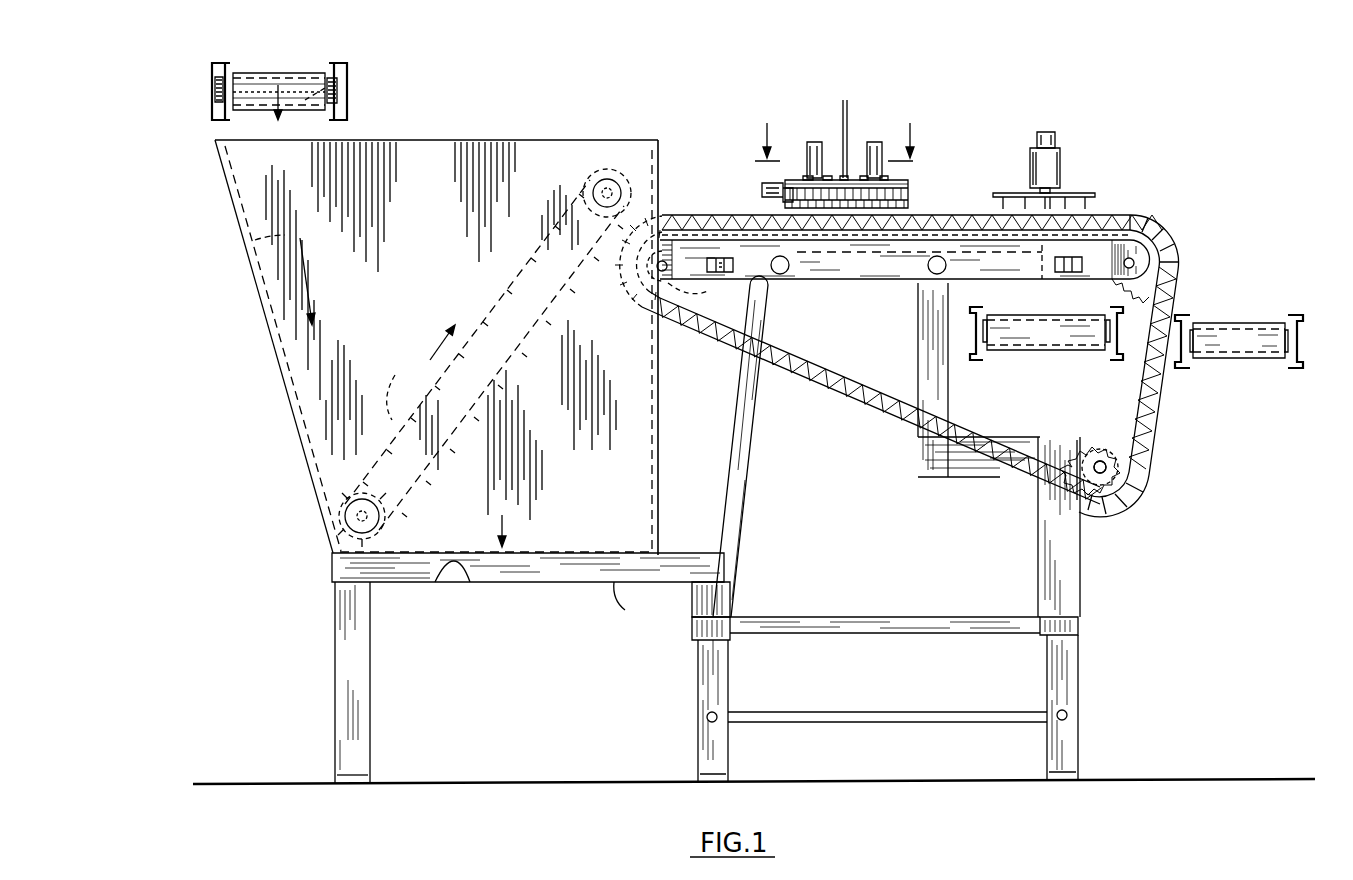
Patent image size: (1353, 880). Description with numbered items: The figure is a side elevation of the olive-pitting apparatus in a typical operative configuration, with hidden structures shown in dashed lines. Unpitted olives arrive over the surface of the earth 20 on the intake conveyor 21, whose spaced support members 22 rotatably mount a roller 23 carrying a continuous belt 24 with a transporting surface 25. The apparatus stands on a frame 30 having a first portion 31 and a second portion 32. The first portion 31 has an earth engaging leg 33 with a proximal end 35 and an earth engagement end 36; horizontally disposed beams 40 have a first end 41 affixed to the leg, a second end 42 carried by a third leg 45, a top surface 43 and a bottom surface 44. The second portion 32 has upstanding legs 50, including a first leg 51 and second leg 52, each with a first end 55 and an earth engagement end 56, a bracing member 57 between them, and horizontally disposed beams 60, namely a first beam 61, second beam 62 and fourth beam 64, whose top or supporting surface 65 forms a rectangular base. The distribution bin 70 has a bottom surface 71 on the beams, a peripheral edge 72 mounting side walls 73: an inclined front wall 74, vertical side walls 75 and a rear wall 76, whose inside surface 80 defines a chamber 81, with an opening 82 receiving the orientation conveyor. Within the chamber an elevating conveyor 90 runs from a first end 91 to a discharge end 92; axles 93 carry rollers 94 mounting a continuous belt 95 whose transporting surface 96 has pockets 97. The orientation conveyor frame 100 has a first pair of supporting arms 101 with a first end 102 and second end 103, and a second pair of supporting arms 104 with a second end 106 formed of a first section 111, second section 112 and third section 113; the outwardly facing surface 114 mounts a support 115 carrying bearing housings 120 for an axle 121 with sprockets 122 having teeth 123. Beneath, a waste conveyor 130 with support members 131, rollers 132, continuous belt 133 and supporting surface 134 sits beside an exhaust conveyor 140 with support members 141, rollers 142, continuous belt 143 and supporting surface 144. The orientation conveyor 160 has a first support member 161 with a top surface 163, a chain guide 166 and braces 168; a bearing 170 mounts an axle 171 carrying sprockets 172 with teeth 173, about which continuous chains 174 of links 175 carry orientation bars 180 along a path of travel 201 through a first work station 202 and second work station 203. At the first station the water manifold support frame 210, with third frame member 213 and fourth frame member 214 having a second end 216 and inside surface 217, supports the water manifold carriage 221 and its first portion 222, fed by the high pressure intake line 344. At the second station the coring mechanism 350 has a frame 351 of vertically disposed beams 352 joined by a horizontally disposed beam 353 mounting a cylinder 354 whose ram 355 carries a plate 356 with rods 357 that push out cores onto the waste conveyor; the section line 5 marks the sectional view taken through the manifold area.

The surface of the earth 20 is at (296, 783).
The intake conveyor 21 is at (309, 72).
The support members 22 is at (218, 63).
The roller 23 is at (335, 86).
The continuous belt 24 is at (258, 82).
The transporting surface 25 is at (296, 73).
The frame 30 is at (787, 533).
The first portion 31 is at (552, 590).
The second portion 32 is at (1045, 684).
The first earth engaging leg 33 is at (355, 697).
The proximal end 35 is at (360, 597).
The distal or earth engagement end 36 is at (368, 770).
The horizontally disposed beams 40 is at (600, 583).
The first end 41 is at (340, 572).
The second end 42 is at (730, 572).
The top surface 43 is at (457, 591).
The bottom surface 44 is at (625, 605).
The third leg 45 is at (732, 599).
The upstanding legs 50 is at (899, 699).
The first leg 51 is at (720, 692).
The second leg 52 is at (1070, 694).
The first end 55 is at (700, 647).
The second or earth engagement end 56 is at (710, 764).
The bracing member 57 is at (920, 718).
The horizontally disposed beams 60 is at (893, 485).
The first beam 61 is at (925, 617).
The second beam 62 is at (1060, 620).
The fourth beam 64 is at (730, 674).
The top or supporting surface 65 is at (745, 617).
The intake or distribution bin 70 is at (448, 324).
The bottom surface 71 is at (530, 552).
The circumscribing or peripheral edge 72 is at (652, 552).
The side walls 73 is at (493, 160).
The inclined front wall 74 is at (285, 240).
The side walls 75 is at (428, 142).
The rear wall 76 is at (657, 460).
The inside surface 80 is at (652, 402).
The chamber or storage space 81 is at (652, 466).
The outlet or opening 82 is at (660, 176).
The elevating conveyor 90 is at (495, 349).
The first end 91 is at (385, 535).
The second or discharge end 92 is at (592, 182).
The axles 93 is at (368, 502).
The rollers 94 is at (650, 197).
The continuous belt 95 is at (480, 307).
The transporting surface 96 is at (530, 262).
The pockets 97 is at (430, 374).
The orientation conveyor frame 100 is at (777, 446).
The first pair of supporting arms 101 is at (742, 442).
The first end 102 is at (715, 608).
The second end 103 is at (1058, 605).
The second pair of supporting arms 104 is at (992, 473).
The second end 106 is at (918, 296).
The first section 111 is at (940, 422).
The second section 112 is at (1000, 437).
The third section 113 is at (1048, 517).
The outwardly facing surface 114 is at (1078, 537).
The support 115 is at (1080, 440).
The bearing housings 120 is at (1120, 454).
The axle 121 is at (1108, 470).
The sprockets 122 is at (1148, 447).
The teeth 123 is at (1090, 437).
The waste conveyor 130 is at (1052, 331).
The support members 131 is at (980, 330).
The rollers 132 is at (1052, 347).
The continuous belt 133 is at (1060, 343).
The supporting surface 134 is at (1040, 312).
The exhaust conveyor 140 is at (1263, 341).
The support members 141 is at (1182, 367).
The rollers 142 is at (1258, 362).
The continuous belt 143 is at (1256, 351).
The supporting surface 144 is at (1218, 320).
The orientation conveyor 160 is at (907, 347).
The first support member 161 is at (856, 276).
The top surface 163 is at (740, 292).
The chain guide 166 is at (928, 264).
The braces 168 is at (948, 267).
The bearing 170 is at (650, 302).
The axle 171 is at (640, 274).
The sprockets 172 is at (655, 307).
The teeth 173 is at (748, 280).
The continuous chains 174 is at (838, 387).
The links 175 is at (797, 362).
The transportation or orientation bars 180 is at (925, 347).
The path of travel 201 is at (730, 177).
The first work station 202 is at (968, 95).
The second work station 203 is at (1120, 160).
The water manifold support frame 210 is at (864, 129).
The third frame member 213 is at (848, 132).
The fourth frame member 214 is at (828, 152).
The second end 216 is at (808, 152).
The inside surface 217 is at (807, 170).
The water manifold carriage 221 is at (762, 182).
The first portion 222 is at (778, 200).
The high pressure intake line 344 is at (843, 107).
The coring mechanism 350 is at (1076, 142).
The frame 351 is at (1038, 125).
The vertically disposed beams 352 is at (1100, 197).
The horizontally disposed beam 353 is at (1056, 138).
The air or hydraulically actuated cylinder 354 is at (1030, 160).
The ram 355 is at (1035, 184).
The plate 356 is at (1085, 194).
The rods or fingers 357 is at (1003, 207).
The section line 5 is at (900, 95).